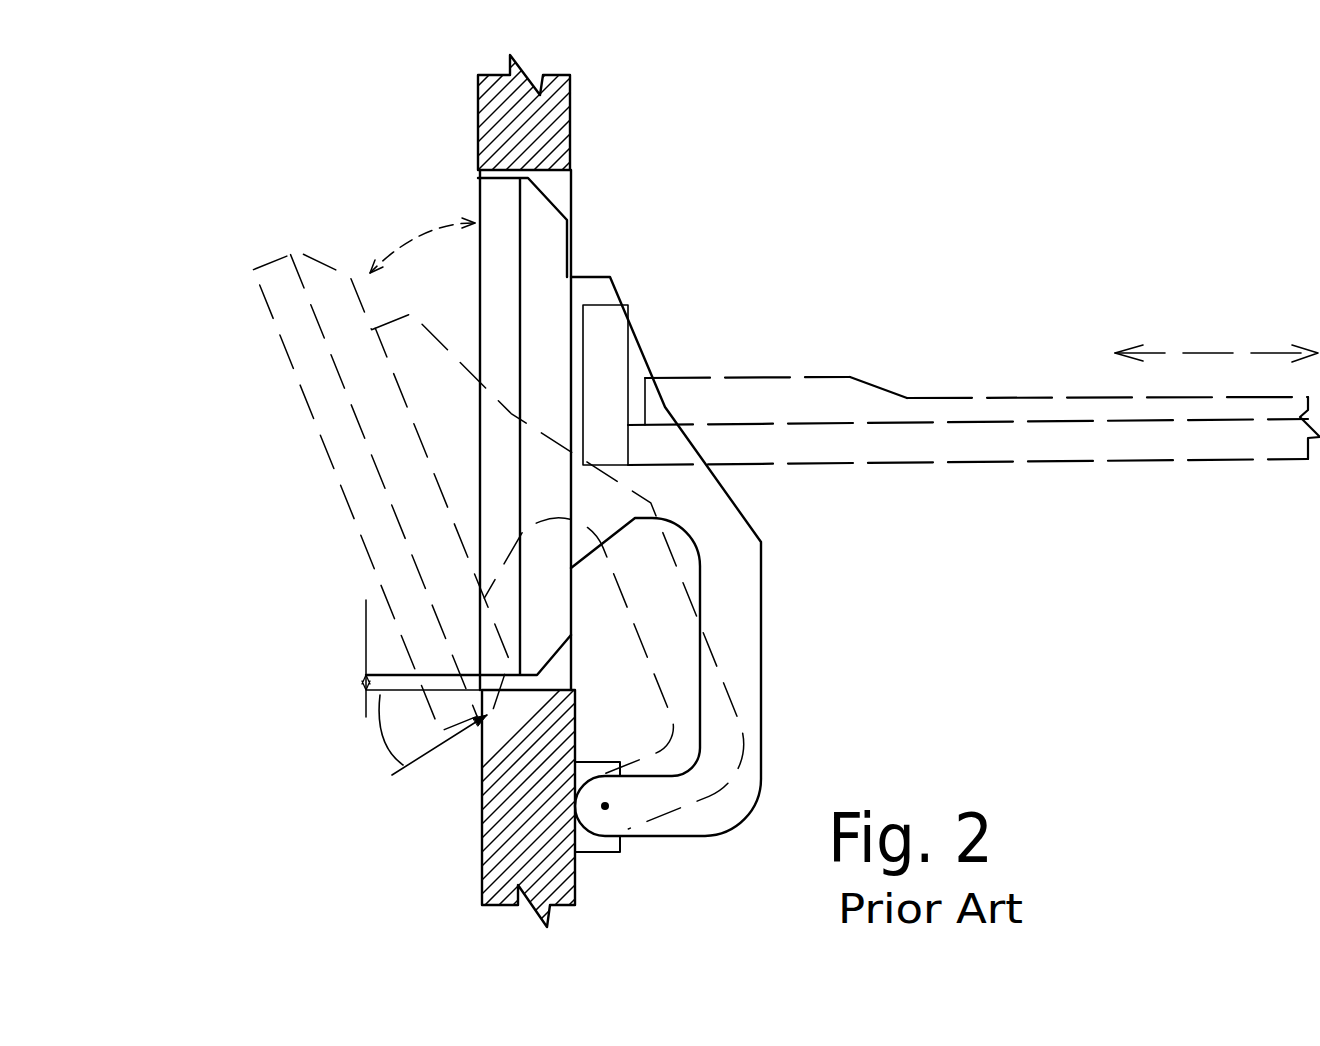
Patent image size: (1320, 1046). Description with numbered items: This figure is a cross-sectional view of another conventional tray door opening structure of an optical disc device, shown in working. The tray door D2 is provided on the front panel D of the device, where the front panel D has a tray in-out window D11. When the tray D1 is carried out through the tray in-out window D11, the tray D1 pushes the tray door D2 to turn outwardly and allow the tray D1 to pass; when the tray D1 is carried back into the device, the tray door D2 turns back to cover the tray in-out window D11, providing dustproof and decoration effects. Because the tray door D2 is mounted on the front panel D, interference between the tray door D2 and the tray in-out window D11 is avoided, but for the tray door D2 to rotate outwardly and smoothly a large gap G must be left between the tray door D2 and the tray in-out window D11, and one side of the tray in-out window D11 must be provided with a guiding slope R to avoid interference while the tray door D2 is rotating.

The front panel D is at (517, 145).
The tray D1 is at (822, 385).
The tray in-out window D11 is at (563, 183).
The tray door D2 is at (508, 295).
The gap G is at (412, 658).
The guiding slope R is at (422, 735).